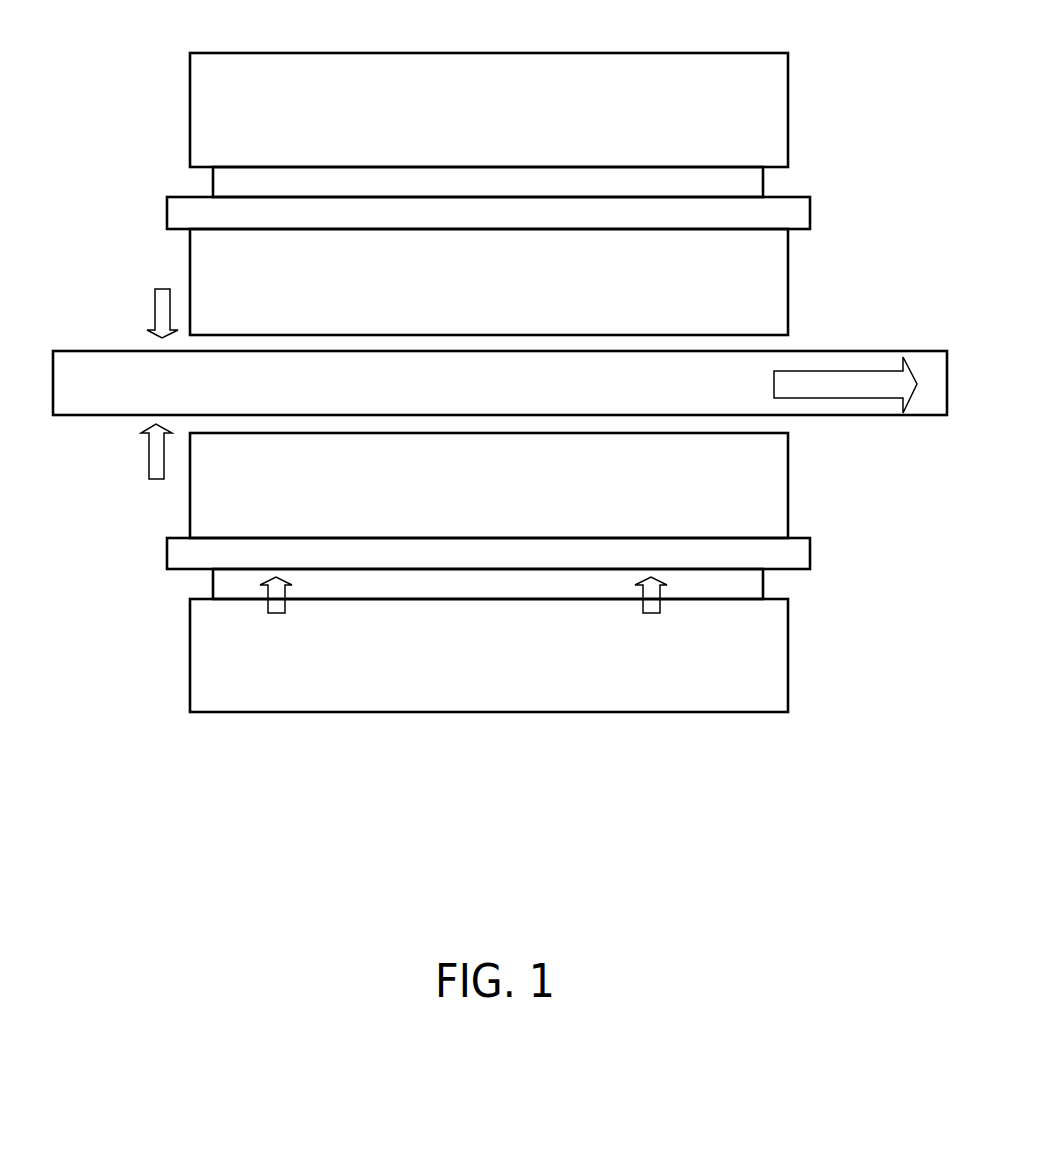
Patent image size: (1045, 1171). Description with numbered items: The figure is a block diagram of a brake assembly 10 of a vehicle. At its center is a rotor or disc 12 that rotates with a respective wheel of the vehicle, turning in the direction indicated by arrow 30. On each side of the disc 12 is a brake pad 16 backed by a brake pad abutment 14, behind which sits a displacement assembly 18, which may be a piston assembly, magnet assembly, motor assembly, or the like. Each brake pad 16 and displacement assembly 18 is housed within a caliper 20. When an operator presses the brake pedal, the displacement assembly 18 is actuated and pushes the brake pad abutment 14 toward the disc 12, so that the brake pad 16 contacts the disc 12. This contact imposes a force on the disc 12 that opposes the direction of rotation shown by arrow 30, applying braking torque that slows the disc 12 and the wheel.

The brake assembly 10 is at (132, 79).
The disc 12 is at (128, 351).
The brake pad abutment 14 is at (810, 213).
The brake pad 16 is at (788, 286).
The displacement assembly 18 is at (763, 183).
The caliper 20 is at (788, 107).
The arrow 30 is at (822, 388).